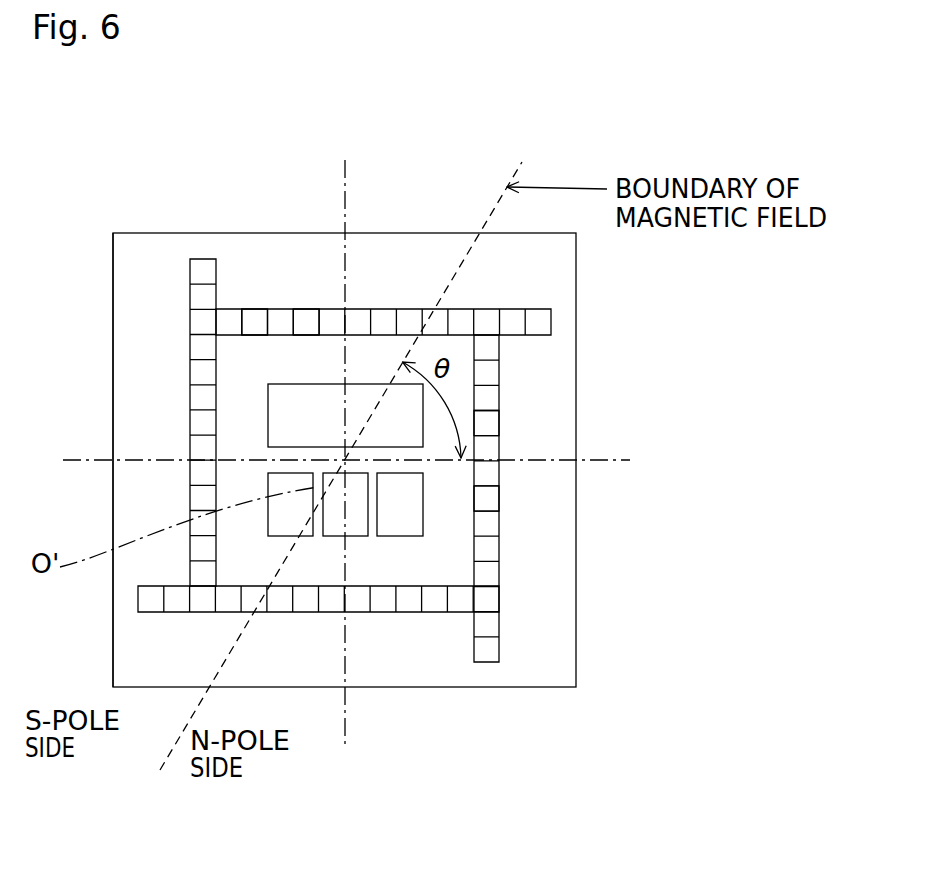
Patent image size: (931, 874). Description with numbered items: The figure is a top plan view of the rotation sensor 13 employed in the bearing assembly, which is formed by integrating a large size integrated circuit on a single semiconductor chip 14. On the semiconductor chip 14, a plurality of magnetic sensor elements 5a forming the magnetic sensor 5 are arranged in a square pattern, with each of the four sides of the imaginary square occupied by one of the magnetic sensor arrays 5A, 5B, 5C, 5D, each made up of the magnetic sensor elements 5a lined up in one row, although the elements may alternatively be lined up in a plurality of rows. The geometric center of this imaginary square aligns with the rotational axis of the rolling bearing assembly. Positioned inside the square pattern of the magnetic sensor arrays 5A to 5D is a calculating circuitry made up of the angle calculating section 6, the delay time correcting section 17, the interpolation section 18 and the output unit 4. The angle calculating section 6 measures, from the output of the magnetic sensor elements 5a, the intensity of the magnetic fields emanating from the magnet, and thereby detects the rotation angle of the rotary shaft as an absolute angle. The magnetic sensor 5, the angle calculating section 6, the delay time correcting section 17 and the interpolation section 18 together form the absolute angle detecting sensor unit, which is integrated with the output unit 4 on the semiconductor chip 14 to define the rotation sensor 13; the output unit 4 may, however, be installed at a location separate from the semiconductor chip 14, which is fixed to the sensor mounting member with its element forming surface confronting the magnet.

The rotation sensor 13 is at (160, 223).
The semiconductor chip 14 is at (112, 305).
The angle calculating section 6 is at (268, 417).
The magnetic sensor 5 is at (354, 444).
The magnetic sensor array 5A is at (388, 307).
The magnetic sensor array 5B is at (505, 523).
The magnetic sensor array 5C is at (385, 618).
The magnetic sensor array 5D is at (187, 474).
The magnetic sensor element 5a is at (313, 320).
The delay time correcting section 17 is at (268, 529).
The interpolation section 18 is at (335, 537).
The output unit 4 is at (408, 537).